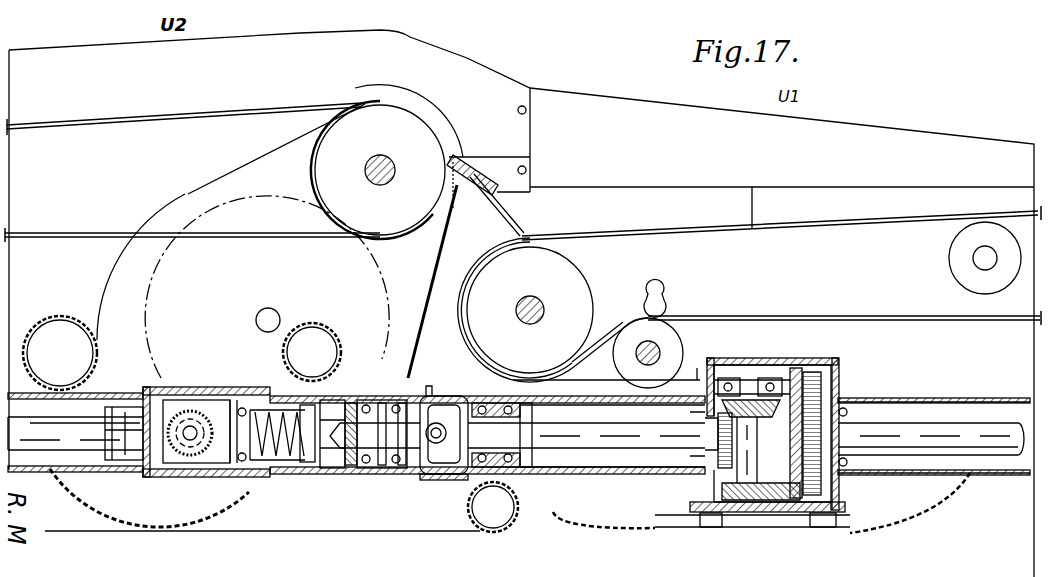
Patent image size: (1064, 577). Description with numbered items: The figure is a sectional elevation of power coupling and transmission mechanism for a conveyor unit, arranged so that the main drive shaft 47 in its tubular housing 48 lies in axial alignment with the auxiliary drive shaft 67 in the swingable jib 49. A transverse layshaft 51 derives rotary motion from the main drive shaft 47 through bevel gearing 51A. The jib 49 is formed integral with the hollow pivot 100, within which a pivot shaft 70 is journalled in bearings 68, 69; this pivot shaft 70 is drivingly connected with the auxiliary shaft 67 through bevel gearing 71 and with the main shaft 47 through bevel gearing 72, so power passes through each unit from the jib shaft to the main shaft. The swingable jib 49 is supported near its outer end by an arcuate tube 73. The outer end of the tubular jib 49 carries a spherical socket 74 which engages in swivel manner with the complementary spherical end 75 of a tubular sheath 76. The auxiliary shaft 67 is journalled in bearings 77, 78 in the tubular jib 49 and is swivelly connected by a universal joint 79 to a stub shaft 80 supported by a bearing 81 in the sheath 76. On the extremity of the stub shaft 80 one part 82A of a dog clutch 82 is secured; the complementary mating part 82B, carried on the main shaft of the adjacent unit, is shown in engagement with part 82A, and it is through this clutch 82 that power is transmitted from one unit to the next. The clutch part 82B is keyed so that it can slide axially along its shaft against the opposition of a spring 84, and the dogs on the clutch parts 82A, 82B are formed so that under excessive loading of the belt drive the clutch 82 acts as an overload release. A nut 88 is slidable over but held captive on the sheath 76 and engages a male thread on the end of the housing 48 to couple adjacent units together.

The main drive shaft 47 is at (910, 430).
The tubular housing 48 is at (990, 476).
The swingable jib 49 is at (515, 470).
The transverse layshaft 51 is at (178, 462).
The bevel gearing 51A is at (183, 398).
The auxiliary drive shaft 67 is at (618, 455).
The bearing 68 is at (768, 395).
The bearing 69 is at (720, 520).
The pivot shaft 70 is at (757, 463).
The bevel gearing 71 is at (737, 398).
The bevel gearing 72 is at (808, 520).
The arcuate tube 73 is at (468, 512).
The spherical socket 74 is at (436, 478).
The spherical end 75 is at (430, 396).
The tubular sheath 76 is at (412, 482).
The bearing 77 is at (700, 419).
The bearing 78 is at (497, 393).
The universal joint 79 is at (385, 377).
The stub shaft 80 is at (361, 393).
The bearing 81 is at (400, 480).
The dog clutch 82 is at (290, 388).
The clutch part 82A is at (345, 485).
The clutch part 82B is at (296, 480).
The spring 84 is at (278, 482).
The nut 88 is at (368, 480).
The hollow pivot 100 is at (780, 522).